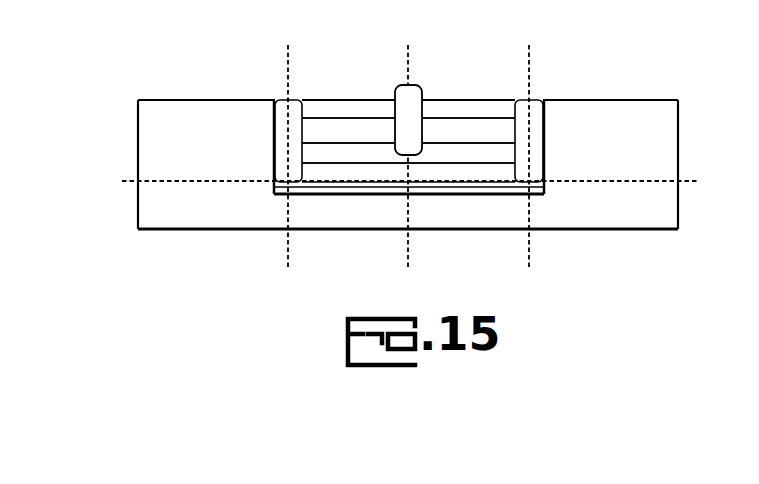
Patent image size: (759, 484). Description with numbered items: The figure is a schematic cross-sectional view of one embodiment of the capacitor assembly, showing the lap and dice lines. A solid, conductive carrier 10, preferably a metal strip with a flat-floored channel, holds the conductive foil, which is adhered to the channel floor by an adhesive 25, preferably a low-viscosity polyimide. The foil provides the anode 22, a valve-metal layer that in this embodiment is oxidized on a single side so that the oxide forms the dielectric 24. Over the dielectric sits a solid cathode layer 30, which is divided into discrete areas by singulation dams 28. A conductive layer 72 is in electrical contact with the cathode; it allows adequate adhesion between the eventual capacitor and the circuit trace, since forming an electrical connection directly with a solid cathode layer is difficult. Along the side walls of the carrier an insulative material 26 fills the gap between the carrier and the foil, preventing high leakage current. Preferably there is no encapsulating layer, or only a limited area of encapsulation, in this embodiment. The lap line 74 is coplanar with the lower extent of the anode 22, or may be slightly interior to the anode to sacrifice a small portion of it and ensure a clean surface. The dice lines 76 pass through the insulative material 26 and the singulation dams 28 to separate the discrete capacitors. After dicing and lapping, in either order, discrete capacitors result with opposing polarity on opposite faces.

The carrier 10 is at (192, 230).
The anode 22 is at (365, 175).
The dielectric 24 is at (352, 155).
The adhesive 25 is at (467, 190).
The insulative material 26 is at (283, 127).
The singulation dam 28 is at (398, 127).
The solid cathode layer 30 is at (332, 130).
The conductive layer 72 is at (440, 103).
The lap line 74 is at (688, 177).
The dice lines 76 is at (287, 257).